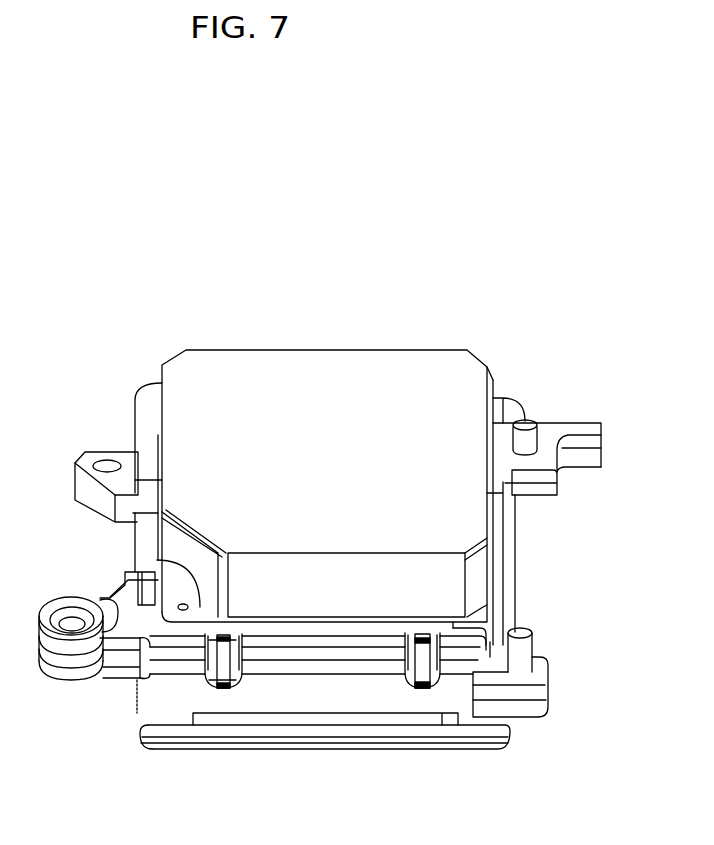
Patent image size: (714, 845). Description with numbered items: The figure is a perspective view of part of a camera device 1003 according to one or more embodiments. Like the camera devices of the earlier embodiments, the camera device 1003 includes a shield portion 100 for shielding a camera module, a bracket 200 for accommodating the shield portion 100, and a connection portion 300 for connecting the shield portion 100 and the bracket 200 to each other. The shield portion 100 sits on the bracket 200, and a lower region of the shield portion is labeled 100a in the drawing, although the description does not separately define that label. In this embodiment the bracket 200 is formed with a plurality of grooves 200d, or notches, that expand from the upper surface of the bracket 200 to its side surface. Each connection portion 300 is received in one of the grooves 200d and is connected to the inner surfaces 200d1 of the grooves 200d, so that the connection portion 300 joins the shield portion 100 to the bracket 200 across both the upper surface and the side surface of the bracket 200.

The camera device 1003 is at (420, 326).
The shield portion 100 is at (220, 380).
The housing mounting portion 100a is at (200, 590).
The bracket 200 is at (160, 703).
The grooves 200d is at (212, 690).
The inner surfaces of the grooves 200d1 is at (226, 690).
The connection portion 300 is at (240, 674).